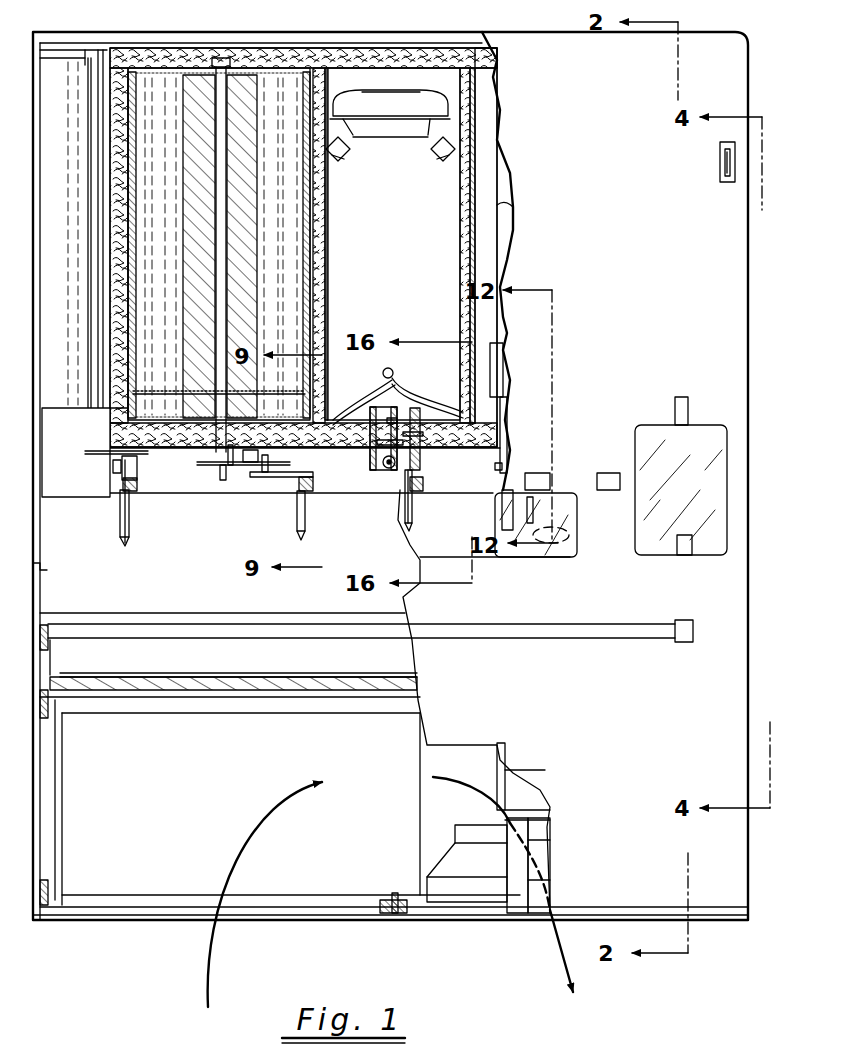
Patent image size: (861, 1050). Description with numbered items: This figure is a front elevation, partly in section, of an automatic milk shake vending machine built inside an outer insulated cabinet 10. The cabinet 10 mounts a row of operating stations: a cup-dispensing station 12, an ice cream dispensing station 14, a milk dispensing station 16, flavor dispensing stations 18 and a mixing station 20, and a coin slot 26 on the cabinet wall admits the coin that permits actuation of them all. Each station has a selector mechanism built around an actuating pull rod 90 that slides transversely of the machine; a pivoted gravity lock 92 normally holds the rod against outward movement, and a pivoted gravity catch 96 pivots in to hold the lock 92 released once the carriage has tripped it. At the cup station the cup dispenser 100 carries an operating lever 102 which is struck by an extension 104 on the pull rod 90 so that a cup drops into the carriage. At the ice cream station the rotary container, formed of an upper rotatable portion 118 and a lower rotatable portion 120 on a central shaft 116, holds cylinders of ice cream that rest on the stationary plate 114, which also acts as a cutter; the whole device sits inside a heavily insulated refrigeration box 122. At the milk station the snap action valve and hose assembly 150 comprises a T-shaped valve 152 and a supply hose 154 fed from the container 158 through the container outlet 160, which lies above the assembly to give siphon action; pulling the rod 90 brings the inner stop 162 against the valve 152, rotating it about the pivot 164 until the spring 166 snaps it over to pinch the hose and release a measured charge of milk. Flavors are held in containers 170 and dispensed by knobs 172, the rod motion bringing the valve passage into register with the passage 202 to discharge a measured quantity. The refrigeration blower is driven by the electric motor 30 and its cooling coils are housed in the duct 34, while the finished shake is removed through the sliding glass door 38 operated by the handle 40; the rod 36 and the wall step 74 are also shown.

The outer insulated cabinet 10 is at (747, 313).
The cup-dispensing station 12 is at (83, 63).
The ice cream dispensing station 14 is at (170, 62).
The milk dispensing station 16 is at (372, 85).
The flavor dispensing station 18 is at (468, 63).
The mixing station 20 is at (610, 90).
The coin slot 26 is at (723, 167).
The electric motor 30 is at (503, 782).
The duct 34 is at (448, 863).
The rod 36 is at (693, 637).
The sliding glass door 38 is at (655, 532).
The handle 40 is at (685, 555).
The wall step 74 is at (52, 563).
The actuating pull rod 90 is at (133, 487).
The pivoted gravity lock 92 is at (125, 546).
The pivoted gravity catch 96 is at (128, 518).
The cup dispenser 100 is at (70, 500).
The operating lever 102 is at (113, 470).
The extension 104 is at (137, 470).
The stationary plate 114 is at (170, 391).
The central shaft 116 is at (217, 200).
The upper rotatable portion 118 is at (135, 152).
The lower rotatable portion 120 is at (137, 408).
The insulated refrigeration box 122 is at (283, 55).
The snap action valve and hose assembly 150 is at (382, 412).
The T-shaped valve 152 is at (403, 478).
The supply hose 154 is at (398, 390).
The container 158 is at (376, 270).
The container outlet 160 is at (391, 372).
The inner stop 162 is at (413, 490).
The pivot 164 is at (432, 432).
The spring 166 is at (421, 457).
The flavor containers 170 is at (513, 207).
The knob 172 is at (540, 479).
The passage 202 is at (608, 473).